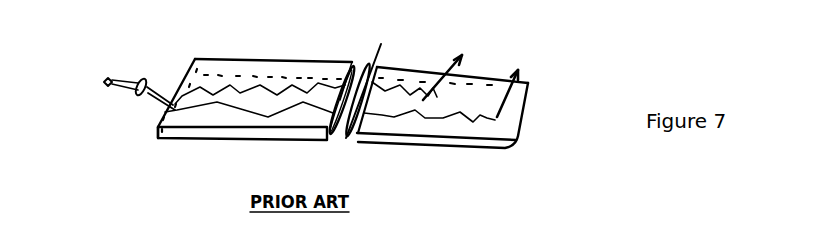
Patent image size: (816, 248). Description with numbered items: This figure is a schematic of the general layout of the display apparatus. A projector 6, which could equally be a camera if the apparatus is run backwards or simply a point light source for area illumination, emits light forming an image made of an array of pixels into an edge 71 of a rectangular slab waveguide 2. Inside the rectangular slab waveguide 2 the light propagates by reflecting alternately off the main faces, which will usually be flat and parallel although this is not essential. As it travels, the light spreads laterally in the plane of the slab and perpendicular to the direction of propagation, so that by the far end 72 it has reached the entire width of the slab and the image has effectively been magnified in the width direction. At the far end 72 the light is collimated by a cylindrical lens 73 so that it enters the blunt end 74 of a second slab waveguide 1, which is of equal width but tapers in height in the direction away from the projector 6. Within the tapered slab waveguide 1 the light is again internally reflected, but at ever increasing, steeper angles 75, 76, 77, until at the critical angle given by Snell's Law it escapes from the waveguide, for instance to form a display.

The tapered slab waveguide 1 is at (427, 152).
The rectangular slab waveguide 2 is at (250, 143).
The projector 6 is at (113, 98).
The edge 71 is at (150, 130).
The far end 72 is at (327, 132).
The cylindrical lens 73 is at (374, 80).
The blunt end 74 is at (348, 133).
The reflection angle 75 is at (431, 122).
The reflection angle 76 is at (470, 122).
The reflection angle 77 is at (495, 123).